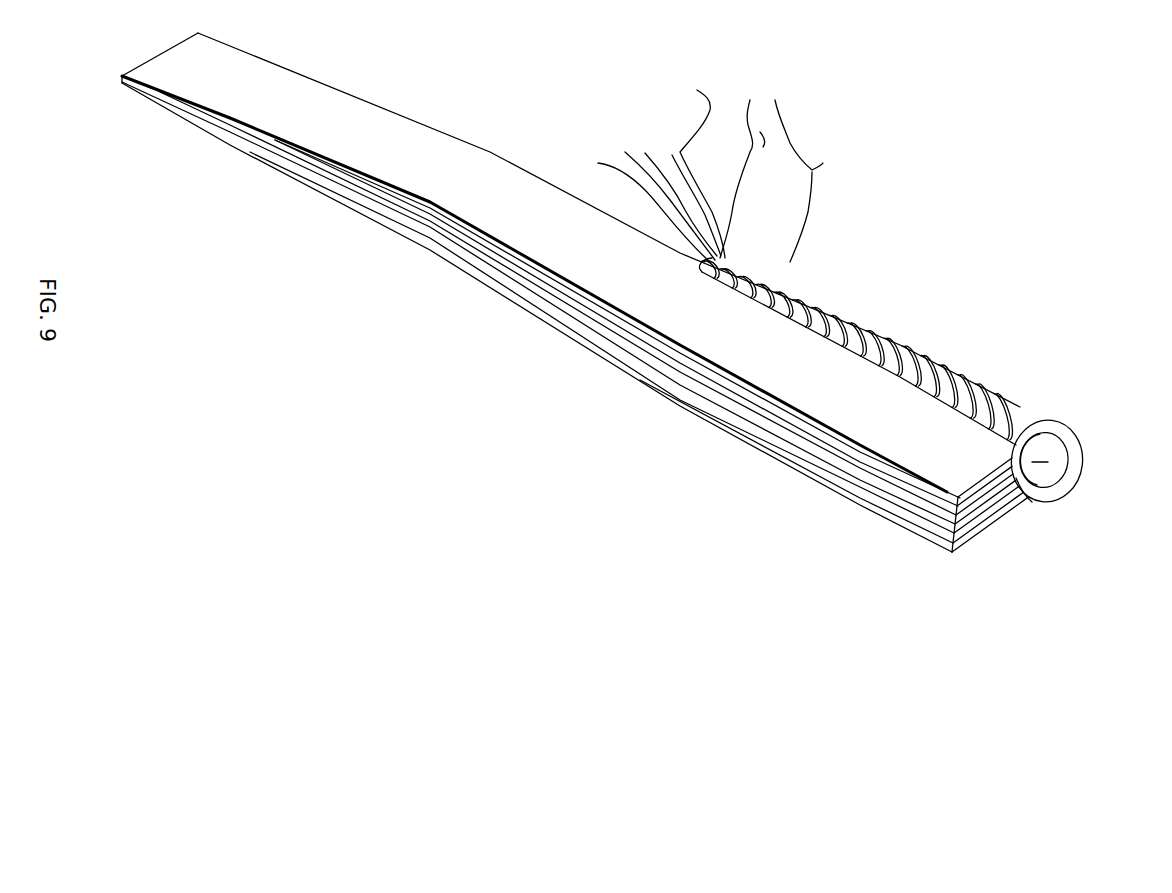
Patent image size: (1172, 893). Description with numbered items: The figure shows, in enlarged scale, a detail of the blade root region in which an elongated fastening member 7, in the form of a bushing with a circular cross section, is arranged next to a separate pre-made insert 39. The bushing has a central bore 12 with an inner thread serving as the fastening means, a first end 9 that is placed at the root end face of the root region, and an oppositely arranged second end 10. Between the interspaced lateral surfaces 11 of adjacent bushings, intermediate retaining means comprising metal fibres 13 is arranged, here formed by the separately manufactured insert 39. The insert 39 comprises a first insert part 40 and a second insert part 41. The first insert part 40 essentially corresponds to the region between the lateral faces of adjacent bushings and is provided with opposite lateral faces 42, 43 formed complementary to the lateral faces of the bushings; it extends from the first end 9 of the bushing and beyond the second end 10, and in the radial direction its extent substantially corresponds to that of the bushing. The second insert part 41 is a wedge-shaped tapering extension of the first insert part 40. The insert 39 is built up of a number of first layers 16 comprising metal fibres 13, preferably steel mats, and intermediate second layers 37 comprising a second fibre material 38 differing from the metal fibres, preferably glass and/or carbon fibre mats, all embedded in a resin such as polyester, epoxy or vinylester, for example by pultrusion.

The fastening member 7 is at (928, 343).
The first end 9 is at (1017, 413).
The second end 10 is at (737, 262).
The lateral surfaces 11 is at (975, 378).
The central bore 12 is at (1032, 462).
The metal fibres 13 is at (710, 167).
The first layers 16 is at (902, 513).
The second layers 37 is at (975, 530).
The second fibre material 38 is at (867, 482).
The insert 39 is at (764, 336).
The first insert part 40 is at (870, 390).
The second insert part 41 is at (393, 131).
The lateral face 42 is at (800, 445).
The lateral face 43 is at (1032, 500).